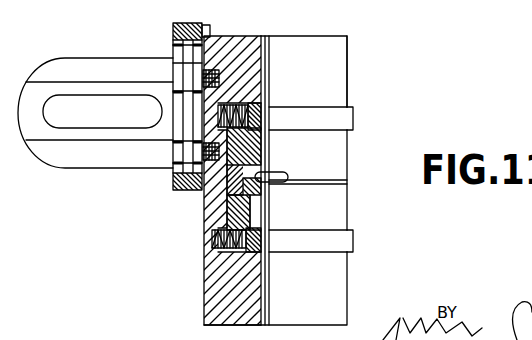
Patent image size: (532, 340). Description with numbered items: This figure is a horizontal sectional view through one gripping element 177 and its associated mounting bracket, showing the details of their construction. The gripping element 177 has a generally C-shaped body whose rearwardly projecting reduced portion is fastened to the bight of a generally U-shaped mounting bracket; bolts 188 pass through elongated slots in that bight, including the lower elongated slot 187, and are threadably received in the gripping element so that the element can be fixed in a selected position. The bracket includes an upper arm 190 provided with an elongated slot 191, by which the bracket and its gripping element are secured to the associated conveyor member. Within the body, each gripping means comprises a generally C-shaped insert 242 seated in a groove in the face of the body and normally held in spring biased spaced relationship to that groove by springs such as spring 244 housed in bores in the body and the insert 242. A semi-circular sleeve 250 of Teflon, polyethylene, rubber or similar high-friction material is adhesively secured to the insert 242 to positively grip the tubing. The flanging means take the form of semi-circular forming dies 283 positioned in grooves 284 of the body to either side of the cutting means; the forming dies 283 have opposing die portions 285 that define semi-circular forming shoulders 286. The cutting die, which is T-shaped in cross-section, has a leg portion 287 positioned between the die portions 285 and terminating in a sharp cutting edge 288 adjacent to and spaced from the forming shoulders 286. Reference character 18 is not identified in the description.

The tube 18 is at (249, 34).
The gripping element 177 is at (350, 60).
The elongated slot 187 is at (165, 174).
The bolts 188 is at (170, 70).
The upper arm 190 is at (112, 67).
The elongated slot 191 is at (70, 127).
The C-shaped insert 242 is at (348, 98).
The spring 244 is at (246, 110).
The semi-circular sleeve 250 is at (348, 98).
The forming die 283 is at (350, 139).
The groove 284 is at (197, 188).
The die portions 285 is at (278, 113).
The forming shoulders 286 is at (280, 176).
The leg portion 287 is at (240, 205).
The cutting edge 288 is at (349, 193).